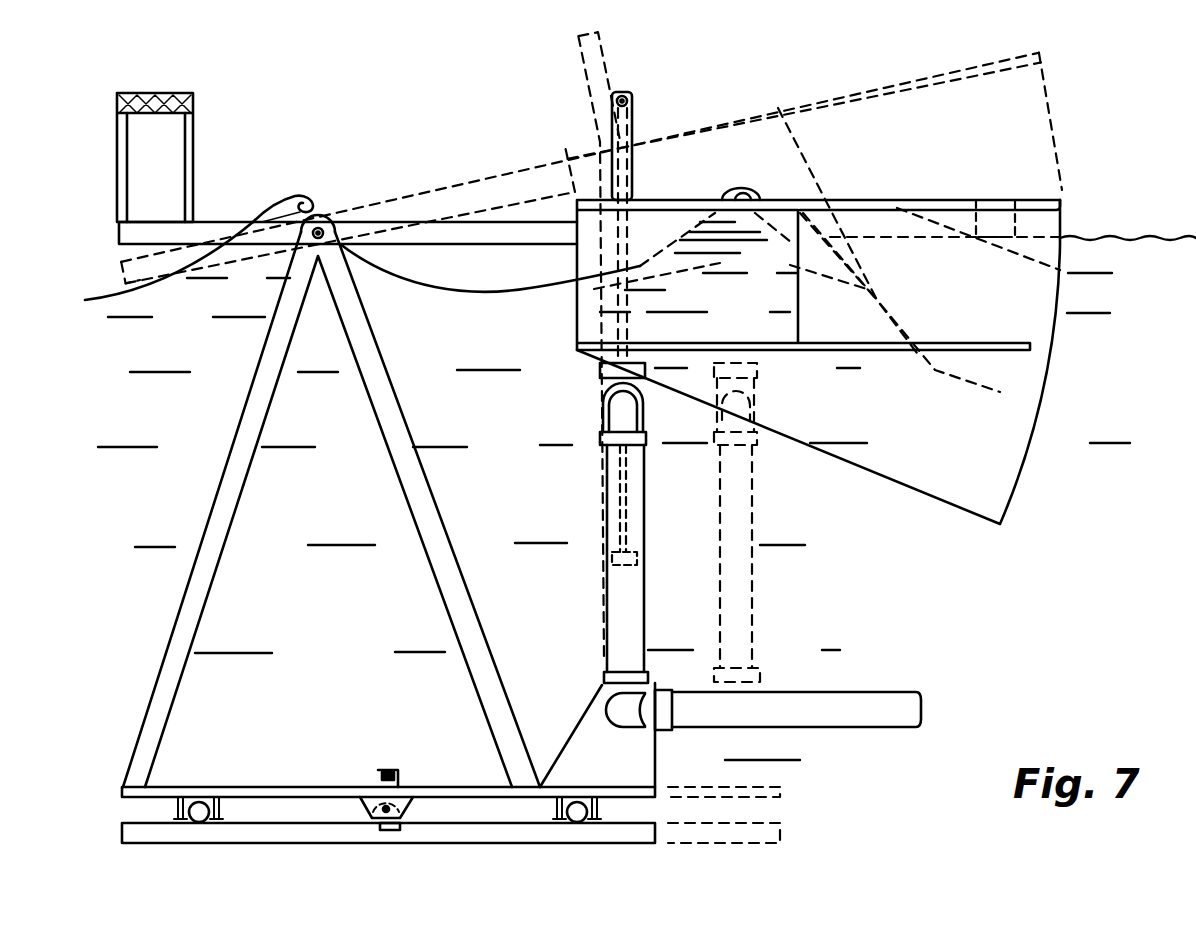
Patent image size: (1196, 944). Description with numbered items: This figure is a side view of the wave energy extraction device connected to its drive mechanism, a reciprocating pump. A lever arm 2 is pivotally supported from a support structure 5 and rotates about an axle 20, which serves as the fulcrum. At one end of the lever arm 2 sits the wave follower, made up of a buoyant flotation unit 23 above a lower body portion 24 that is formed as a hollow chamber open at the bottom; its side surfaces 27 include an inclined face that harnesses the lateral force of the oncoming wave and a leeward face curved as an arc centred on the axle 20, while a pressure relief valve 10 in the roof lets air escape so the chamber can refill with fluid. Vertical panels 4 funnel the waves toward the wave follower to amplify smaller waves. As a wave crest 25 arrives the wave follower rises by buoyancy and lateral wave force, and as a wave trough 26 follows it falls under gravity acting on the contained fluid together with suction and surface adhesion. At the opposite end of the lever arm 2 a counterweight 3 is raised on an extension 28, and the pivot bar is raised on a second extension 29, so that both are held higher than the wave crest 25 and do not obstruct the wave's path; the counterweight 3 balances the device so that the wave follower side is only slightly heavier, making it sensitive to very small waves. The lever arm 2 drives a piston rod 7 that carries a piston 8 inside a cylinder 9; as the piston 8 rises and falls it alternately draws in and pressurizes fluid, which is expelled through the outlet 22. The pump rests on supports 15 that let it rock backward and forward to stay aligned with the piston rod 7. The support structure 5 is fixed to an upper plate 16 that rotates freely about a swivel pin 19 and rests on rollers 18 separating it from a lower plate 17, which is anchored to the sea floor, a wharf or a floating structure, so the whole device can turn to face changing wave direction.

The lever arm 2 is at (446, 232).
The counterweight 3 is at (174, 93).
The vertical panels 4 is at (765, 318).
The support structure 5 is at (429, 523).
The piston rod 7 is at (620, 496).
The piston 8 is at (614, 555).
The cylinder 9 is at (628, 602).
The pressure relief valve 10 is at (988, 220).
The pump supports 15 is at (577, 752).
The upper plate 16 is at (653, 789).
The lower plate 17 is at (632, 828).
The rollers 18 is at (201, 804).
The swivel pin 19 is at (390, 770).
The axle 20 is at (323, 226).
The outlet 22 is at (858, 697).
The flotation unit 23 is at (883, 222).
The lower body portion 24 is at (1022, 307).
The wave crest 25 is at (280, 213).
The wave trough 26 is at (513, 290).
The side surface 27 is at (892, 318).
The counterweight extension 28 is at (186, 158).
The pivot bar extension 29 is at (632, 122).